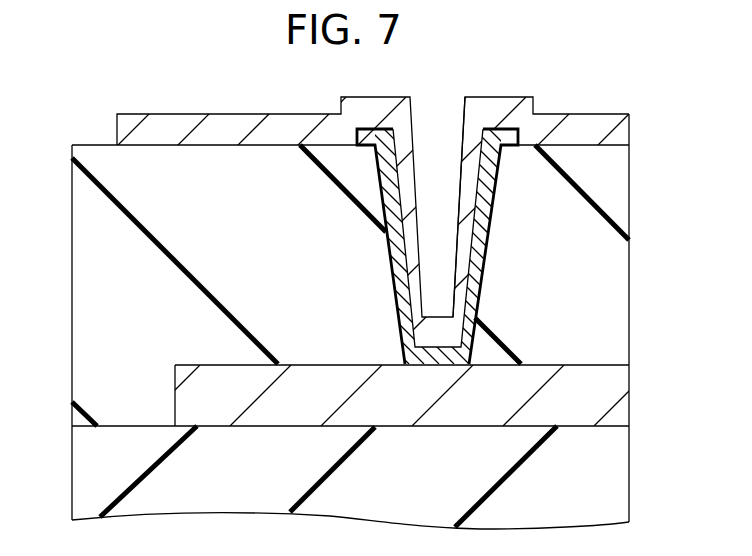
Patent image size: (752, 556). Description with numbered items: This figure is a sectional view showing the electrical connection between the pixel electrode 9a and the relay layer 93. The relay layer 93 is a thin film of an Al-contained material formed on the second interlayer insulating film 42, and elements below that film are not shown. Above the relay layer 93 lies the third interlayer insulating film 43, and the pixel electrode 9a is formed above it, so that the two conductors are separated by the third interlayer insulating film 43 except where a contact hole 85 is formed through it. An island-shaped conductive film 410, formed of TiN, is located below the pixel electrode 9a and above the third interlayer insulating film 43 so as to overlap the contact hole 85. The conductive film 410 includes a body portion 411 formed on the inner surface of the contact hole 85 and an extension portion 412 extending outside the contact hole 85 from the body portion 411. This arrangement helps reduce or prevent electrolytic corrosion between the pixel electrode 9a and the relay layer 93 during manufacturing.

The pixel electrode 9a is at (583, 127).
The conductive film 410 is at (434, 246).
The extension portion 412 is at (372, 141).
The body portion 411 is at (396, 257).
The contact hole 85 is at (485, 196).
The third interlayer insulating film 43 is at (617, 263).
The relay layer 93 is at (605, 400).
The second interlayer insulating film 42 is at (615, 477).